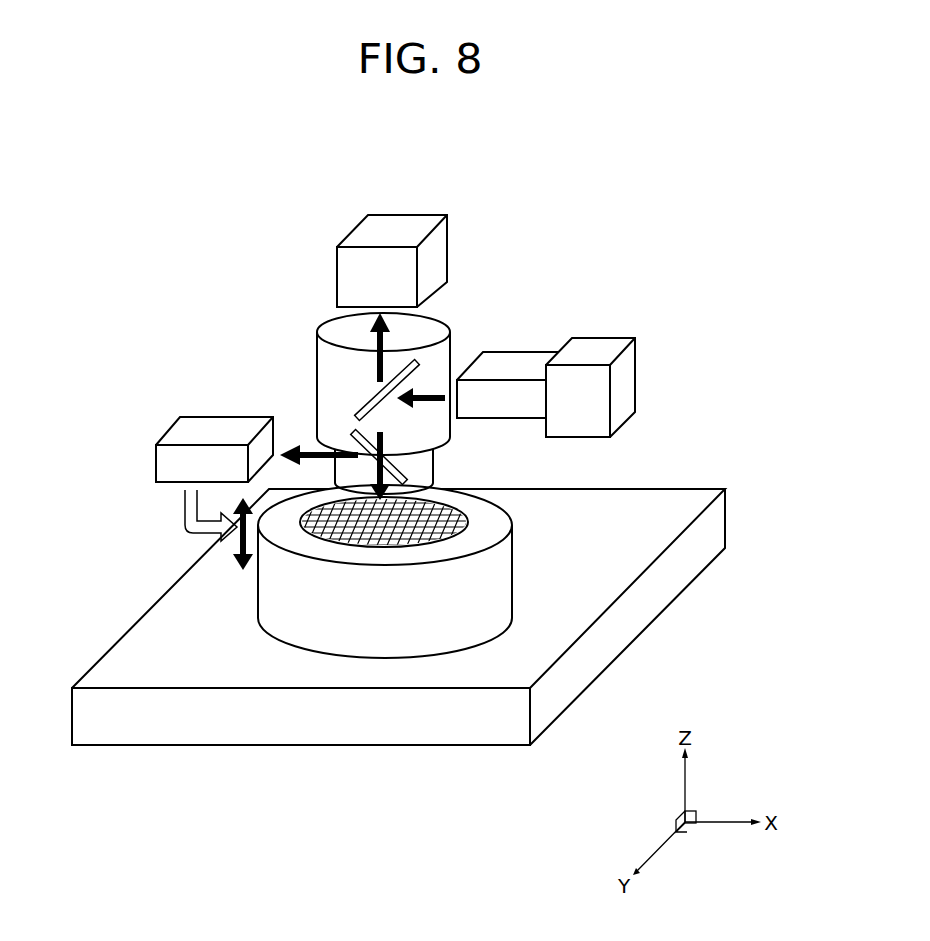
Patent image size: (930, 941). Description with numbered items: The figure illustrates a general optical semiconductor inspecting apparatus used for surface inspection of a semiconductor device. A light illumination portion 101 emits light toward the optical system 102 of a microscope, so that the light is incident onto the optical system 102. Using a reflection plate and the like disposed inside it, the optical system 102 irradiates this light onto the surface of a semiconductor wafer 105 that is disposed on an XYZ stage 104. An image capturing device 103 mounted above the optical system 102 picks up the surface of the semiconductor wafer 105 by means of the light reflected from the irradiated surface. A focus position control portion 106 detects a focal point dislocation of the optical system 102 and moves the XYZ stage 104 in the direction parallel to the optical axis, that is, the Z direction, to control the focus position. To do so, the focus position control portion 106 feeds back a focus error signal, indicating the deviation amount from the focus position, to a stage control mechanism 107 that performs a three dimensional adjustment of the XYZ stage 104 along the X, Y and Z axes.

The light illumination portion 101 is at (594, 345).
The optical system 102 is at (430, 330).
The image capturing device 103 is at (393, 220).
The XYZ stage 104 is at (487, 512).
The semiconductor wafer 105 is at (447, 498).
The focus position control portion 106 is at (210, 428).
The stage control mechanism 107 is at (718, 518).